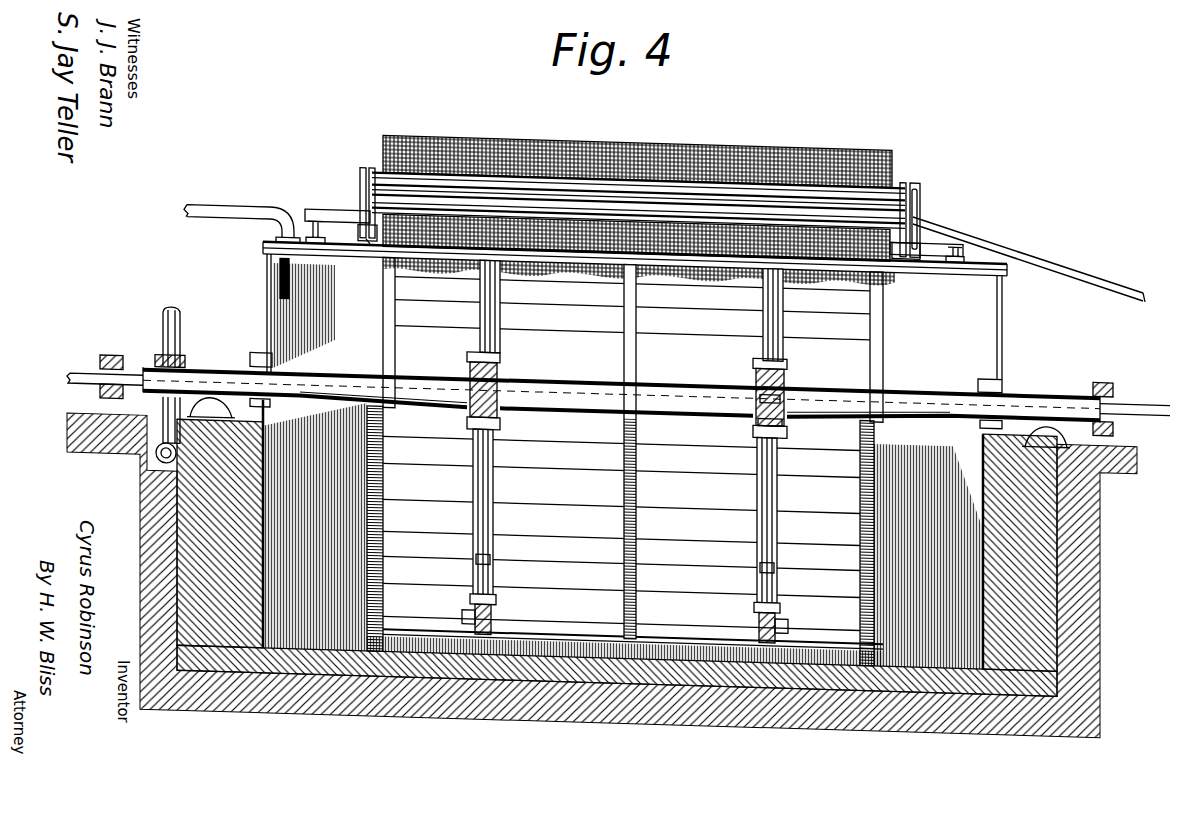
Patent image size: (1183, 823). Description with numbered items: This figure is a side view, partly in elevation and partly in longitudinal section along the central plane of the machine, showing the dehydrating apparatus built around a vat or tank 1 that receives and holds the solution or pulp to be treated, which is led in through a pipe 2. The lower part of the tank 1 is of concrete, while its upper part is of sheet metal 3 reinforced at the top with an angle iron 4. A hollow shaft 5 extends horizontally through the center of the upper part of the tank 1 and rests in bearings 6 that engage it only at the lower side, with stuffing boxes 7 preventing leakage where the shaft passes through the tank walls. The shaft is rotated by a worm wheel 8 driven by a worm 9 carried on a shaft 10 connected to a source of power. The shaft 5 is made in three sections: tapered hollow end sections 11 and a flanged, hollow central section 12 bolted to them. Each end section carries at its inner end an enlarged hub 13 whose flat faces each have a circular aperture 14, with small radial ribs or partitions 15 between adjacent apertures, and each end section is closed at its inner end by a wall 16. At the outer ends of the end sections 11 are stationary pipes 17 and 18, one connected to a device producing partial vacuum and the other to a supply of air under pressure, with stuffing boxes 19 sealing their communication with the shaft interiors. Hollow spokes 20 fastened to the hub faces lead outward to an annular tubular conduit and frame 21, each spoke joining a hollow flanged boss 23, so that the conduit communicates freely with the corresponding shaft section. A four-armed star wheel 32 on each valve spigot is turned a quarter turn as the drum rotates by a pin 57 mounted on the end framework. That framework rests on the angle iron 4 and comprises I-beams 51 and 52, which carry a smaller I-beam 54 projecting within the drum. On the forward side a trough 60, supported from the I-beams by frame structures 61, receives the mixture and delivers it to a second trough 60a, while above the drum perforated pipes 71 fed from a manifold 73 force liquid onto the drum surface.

The vat or tank 1 is at (602, 566).
The pipe 2 is at (225, 205).
The sheet metal 3 is at (1000, 295).
The angle iron 4 is at (1000, 217).
The hollow shaft 5 is at (625, 461).
The bearings 6 is at (1085, 404).
The stuffing boxes 7 is at (258, 344).
The worm wheel 8 is at (182, 330).
The worm 9 is at (160, 445).
The shaft 10 is at (622, 560).
The end shaft sections 11 is at (350, 352).
The central section 12 is at (658, 352).
The hub 13 is at (468, 348).
The circular aperture 14 is at (792, 401).
The radial ribs or partitions 15 is at (790, 381).
The wall 16 is at (515, 393).
The stationary pipe 17 is at (80, 363).
The stationary pipe 18 is at (1143, 372).
The stuffing boxes 19 is at (112, 349).
The hollow spokes 20 is at (492, 486).
The annular tubular ring or combined conduit and frame 21 is at (495, 545).
The hollow flanged boss 23 is at (497, 595).
The star wheel 32 is at (462, 589).
The I-beam 51 is at (308, 216).
The I-beam 52 is at (345, 214).
The smaller I-beam 54 is at (335, 240).
The pin 57 is at (490, 122).
The trough 60 is at (917, 175).
The second trough 60a is at (1088, 243).
The frame structures 61 is at (378, 234).
The pipes 71 is at (375, 159).
The manifold 73 is at (912, 158).